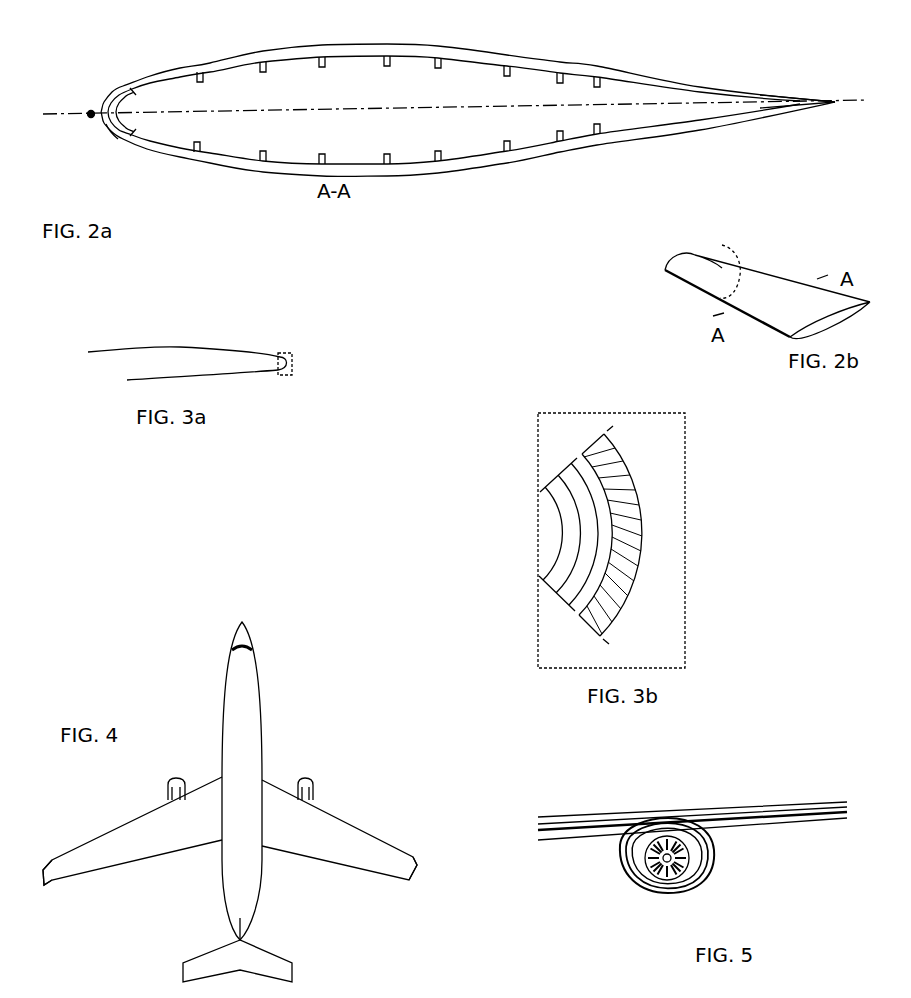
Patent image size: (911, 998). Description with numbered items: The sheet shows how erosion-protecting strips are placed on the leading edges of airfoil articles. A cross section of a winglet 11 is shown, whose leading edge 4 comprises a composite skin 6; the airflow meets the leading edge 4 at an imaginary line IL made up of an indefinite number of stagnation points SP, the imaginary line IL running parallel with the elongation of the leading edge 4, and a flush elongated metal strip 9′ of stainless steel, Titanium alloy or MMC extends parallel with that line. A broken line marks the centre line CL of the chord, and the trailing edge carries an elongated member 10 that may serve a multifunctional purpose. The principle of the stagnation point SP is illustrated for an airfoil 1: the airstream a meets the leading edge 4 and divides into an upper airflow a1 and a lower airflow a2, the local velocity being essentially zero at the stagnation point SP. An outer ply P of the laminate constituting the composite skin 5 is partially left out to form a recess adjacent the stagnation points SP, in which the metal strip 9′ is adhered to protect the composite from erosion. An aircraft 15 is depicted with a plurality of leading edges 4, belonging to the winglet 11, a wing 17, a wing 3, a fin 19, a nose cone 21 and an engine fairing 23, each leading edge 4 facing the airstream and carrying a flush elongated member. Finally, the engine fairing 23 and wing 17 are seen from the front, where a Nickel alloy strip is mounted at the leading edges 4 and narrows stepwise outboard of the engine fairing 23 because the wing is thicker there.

In FIG. 3a, the aircraft wing 1 is at (215, 339).
In FIG. 4, the wing 3 is at (287, 960).
In FIG. 2a, the leading edge 4 is at (104, 80).
In FIG. 2b, the leading edge 4 is at (748, 324).
In FIG. 3a, the leading edge 4 is at (286, 343).
In FIG. 3b, the leading edge 4 is at (496, 508).
In FIG. 4, the leading edge 4 is at (226, 608).
In FIG. 5, the leading edge 4 is at (800, 799).
In FIG. 3b, the composite skin 5 is at (582, 602).
In FIG. 2a, the composite skin 6 is at (248, 52).
In FIG. 2a, the flush elongated metal strip 9′ is at (103, 103).
In FIG. 3b, the flush elongated metal strip 9′ is at (631, 474).
In FIG. 2a, the elongated member 10 is at (786, 112).
In FIG. 2a, the winglet 11 is at (290, 181).
In FIG. 2b, the winglet 11 is at (759, 270).
In FIG. 4, the winglet 11 is at (420, 866).
In FIG. 4, the aircraft 15 is at (376, 710).
In FIG. 4, the wing 17 is at (362, 840).
In FIG. 5, the wing 17 is at (602, 817).
In FIG. 4, the fin 19 is at (250, 932).
In FIG. 4, the nose 21 is at (277, 687).
In FIG. 4, the engine fairing 23 is at (315, 782).
In FIG. 5, the engine fairing 23 is at (597, 879).
In FIG. 2a, the centre line CL is at (183, 111).
In FIG. 2a, the stagnation point SP is at (88, 113).
In FIG. 2b, the stagnation point SP is at (703, 313).
In FIG. 3b, the stagnation point SP is at (686, 505).
In FIG. 2a, the imaginary line IL is at (96, 122).
In FIG. 2b, the imaginary line IL is at (722, 252).
In FIG. 3b, the outer ply P is at (590, 444).
In FIG. 3a, the airstream a is at (301, 362).
In FIG. 3b, the airstream a is at (731, 575).
In FIG. 3b, the upper airflow a1 is at (680, 506).
In FIG. 3b, the lower airflow a2 is at (750, 548).